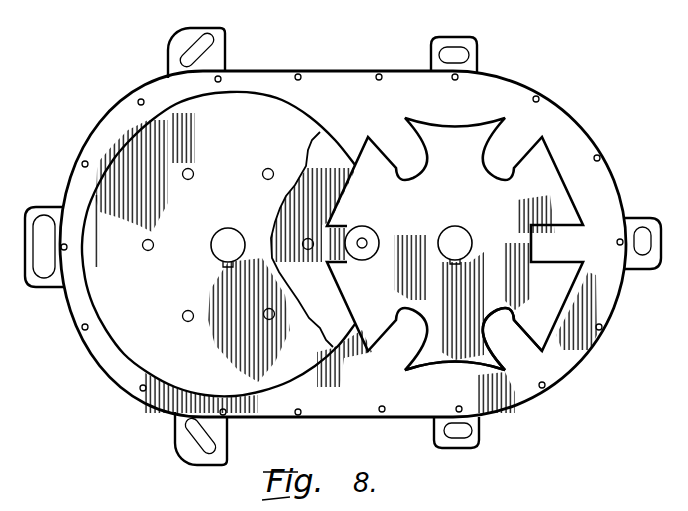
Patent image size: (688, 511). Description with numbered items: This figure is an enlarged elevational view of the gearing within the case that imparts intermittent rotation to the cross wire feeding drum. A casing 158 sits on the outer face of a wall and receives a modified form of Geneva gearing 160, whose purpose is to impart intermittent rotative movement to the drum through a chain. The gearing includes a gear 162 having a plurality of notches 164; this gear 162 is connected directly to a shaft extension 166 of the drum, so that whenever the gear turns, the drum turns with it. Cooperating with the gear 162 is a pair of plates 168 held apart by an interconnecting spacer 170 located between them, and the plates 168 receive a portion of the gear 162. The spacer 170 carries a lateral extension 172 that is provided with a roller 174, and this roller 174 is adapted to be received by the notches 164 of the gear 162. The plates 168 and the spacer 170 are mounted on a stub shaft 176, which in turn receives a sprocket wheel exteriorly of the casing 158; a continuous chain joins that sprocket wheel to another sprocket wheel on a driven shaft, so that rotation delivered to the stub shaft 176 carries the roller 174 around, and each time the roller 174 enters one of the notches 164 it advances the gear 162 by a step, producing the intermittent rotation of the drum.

The casing 158 is at (573, 347).
The Geneva gearing 160 is at (389, 369).
The gear 162 is at (455, 350).
The notches 164 is at (497, 342).
The shaft extension 166 is at (463, 236).
The plates 168 is at (150, 357).
The spacer 170 is at (312, 297).
The lateral extension 172 is at (350, 236).
The roller 174 is at (377, 236).
The stub shaft 176 is at (212, 248).